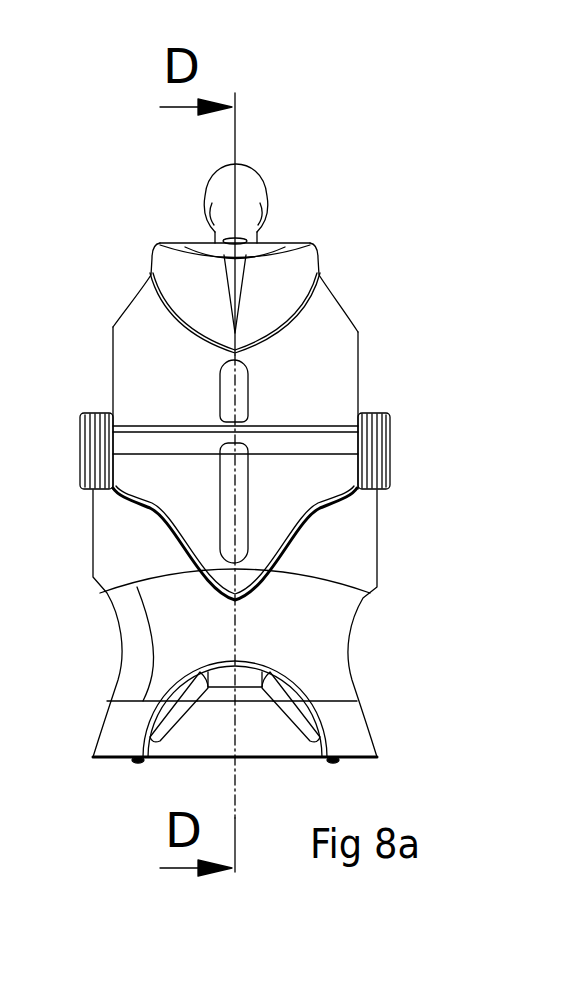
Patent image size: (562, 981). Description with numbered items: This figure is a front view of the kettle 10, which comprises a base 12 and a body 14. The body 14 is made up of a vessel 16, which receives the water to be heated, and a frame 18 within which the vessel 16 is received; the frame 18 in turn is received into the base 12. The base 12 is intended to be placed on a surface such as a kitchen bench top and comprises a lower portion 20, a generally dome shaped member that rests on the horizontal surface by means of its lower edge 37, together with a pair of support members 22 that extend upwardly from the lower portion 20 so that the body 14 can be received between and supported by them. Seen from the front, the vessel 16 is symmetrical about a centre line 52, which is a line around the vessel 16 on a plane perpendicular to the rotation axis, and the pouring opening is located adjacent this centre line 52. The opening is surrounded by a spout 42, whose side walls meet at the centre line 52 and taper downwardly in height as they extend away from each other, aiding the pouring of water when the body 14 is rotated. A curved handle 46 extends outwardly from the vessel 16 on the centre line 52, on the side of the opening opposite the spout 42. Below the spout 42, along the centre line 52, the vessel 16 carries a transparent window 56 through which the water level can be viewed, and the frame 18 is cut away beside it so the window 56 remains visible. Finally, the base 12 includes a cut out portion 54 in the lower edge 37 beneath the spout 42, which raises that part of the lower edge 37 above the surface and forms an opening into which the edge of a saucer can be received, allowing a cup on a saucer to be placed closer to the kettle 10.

The kettle 10 is at (433, 404).
The base 12 is at (372, 717).
The body 14 is at (380, 253).
The vessel 16 is at (328, 362).
The frame 18 is at (290, 552).
The lower portion 20 is at (112, 738).
The support members 22 is at (115, 527).
The lower edge 37 is at (347, 760).
The spout 42 is at (227, 257).
The handle 46 is at (250, 193).
The centre line 52 is at (232, 543).
The cut out portion 54 is at (218, 745).
The transparent window 56 is at (227, 450).